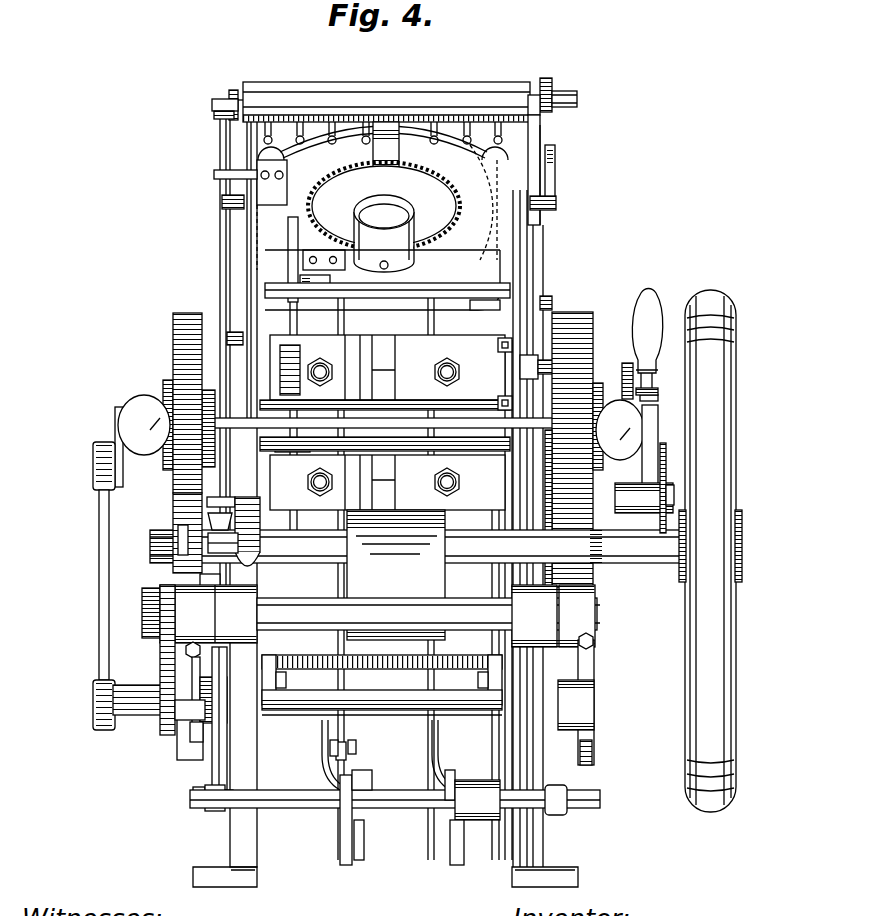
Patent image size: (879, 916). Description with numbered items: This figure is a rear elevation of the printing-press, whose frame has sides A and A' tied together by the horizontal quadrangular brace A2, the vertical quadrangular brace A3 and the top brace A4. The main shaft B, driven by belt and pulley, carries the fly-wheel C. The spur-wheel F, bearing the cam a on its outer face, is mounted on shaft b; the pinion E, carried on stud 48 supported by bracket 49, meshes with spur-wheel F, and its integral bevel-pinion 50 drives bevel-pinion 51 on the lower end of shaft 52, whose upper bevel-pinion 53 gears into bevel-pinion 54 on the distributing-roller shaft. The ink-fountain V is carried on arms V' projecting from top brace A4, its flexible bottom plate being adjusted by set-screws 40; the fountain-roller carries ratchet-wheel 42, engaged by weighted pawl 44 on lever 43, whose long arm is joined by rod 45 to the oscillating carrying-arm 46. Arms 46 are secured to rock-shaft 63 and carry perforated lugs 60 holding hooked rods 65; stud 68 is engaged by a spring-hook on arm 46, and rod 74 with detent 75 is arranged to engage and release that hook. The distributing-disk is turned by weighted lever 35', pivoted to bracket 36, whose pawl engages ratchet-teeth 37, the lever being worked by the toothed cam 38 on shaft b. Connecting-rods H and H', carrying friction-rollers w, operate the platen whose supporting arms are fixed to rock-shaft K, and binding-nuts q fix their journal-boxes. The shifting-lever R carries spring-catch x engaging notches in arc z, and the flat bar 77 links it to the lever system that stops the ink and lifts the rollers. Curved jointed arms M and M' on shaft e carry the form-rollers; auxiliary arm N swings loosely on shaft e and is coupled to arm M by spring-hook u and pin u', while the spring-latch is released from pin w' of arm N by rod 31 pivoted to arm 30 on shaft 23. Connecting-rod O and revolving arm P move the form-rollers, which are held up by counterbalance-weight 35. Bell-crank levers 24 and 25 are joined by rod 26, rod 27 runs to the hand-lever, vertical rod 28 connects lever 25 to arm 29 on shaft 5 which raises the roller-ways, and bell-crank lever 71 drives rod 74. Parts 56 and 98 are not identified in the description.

The top rail 56 is at (432, 90).
The ink-fountain V is at (386, 104).
The bevel-pinion 54 is at (232, 92).
The bevel-pinion 53 is at (212, 110).
The weighted pawl 44 is at (548, 78).
The ratchet-wheel 42 is at (535, 95).
The lever 43 is at (555, 130).
The rod 45 is at (557, 172).
The perforated lugs 60 is at (545, 210).
The hooked rods 65 is at (534, 268).
The shaft 52 is at (222, 240).
The carrying-arm 46 is at (249, 395).
The arms V' is at (358, 207).
The ratchet-teeth 37 is at (335, 188).
The bracket 36 is at (316, 250).
The arm 29 is at (330, 280).
The top brace A4 is at (430, 298).
The shaft 5 is at (420, 300).
The vertical quadrangular brace A3 is at (387, 422).
The shaft b is at (365, 402).
The toothed cam 38 is at (302, 450).
The rock-shaft 63 is at (448, 425).
The vertical rod 28 is at (344, 322).
The weighted lever 35' is at (306, 415).
The set-screws 40 is at (500, 312).
The rod 74 is at (506, 374).
The detent 75 is at (498, 350).
The stud 68 is at (545, 374).
The counterbalance-weight 35 is at (396, 575).
The main shaft B is at (425, 546).
The shaft e is at (330, 610).
The horizontal quadrangular brace A2 is at (380, 663).
The rock-shaft K is at (382, 702).
The revolving arm P is at (112, 425).
The connecting-rod O is at (100, 590).
The connecting-rod H is at (144, 425).
The pin w' is at (149, 433).
The cam a is at (163, 384).
The spur-wheel F is at (173, 492).
The pinion E is at (178, 560).
The bevel-pinion 50 is at (210, 497).
The bracket 49 is at (247, 497).
The bevel-pinion 51 is at (235, 536).
The stud 48 is at (218, 553).
The auxiliary arm N is at (160, 660).
The curved jointed arm M is at (186, 705).
The spring-hook u is at (195, 750).
The pin u' is at (153, 727).
The rod 31 is at (212, 772).
The arm 30 is at (200, 808).
The side of frame A is at (225, 493).
The side of frame A' is at (545, 861).
The transverse shaft 23 is at (295, 800).
The rod 27 is at (320, 740).
The bell-crank lever 24 is at (348, 761).
The rod 26 is at (340, 826).
The bell-crank lever 25 is at (352, 835).
The bell-crank lever 71 is at (478, 815).
The binding-nuts q is at (569, 449).
The connecting-rod H' is at (620, 430).
The friction-rollers w is at (621, 440).
The arc z is at (624, 366).
The shifting-lever R is at (646, 295).
The spring-catch x is at (645, 395).
The nut 98 is at (658, 392).
The flat bar 77 is at (666, 464).
The curved jointed arm M' is at (592, 699).
The fly-wheel C is at (710, 551).